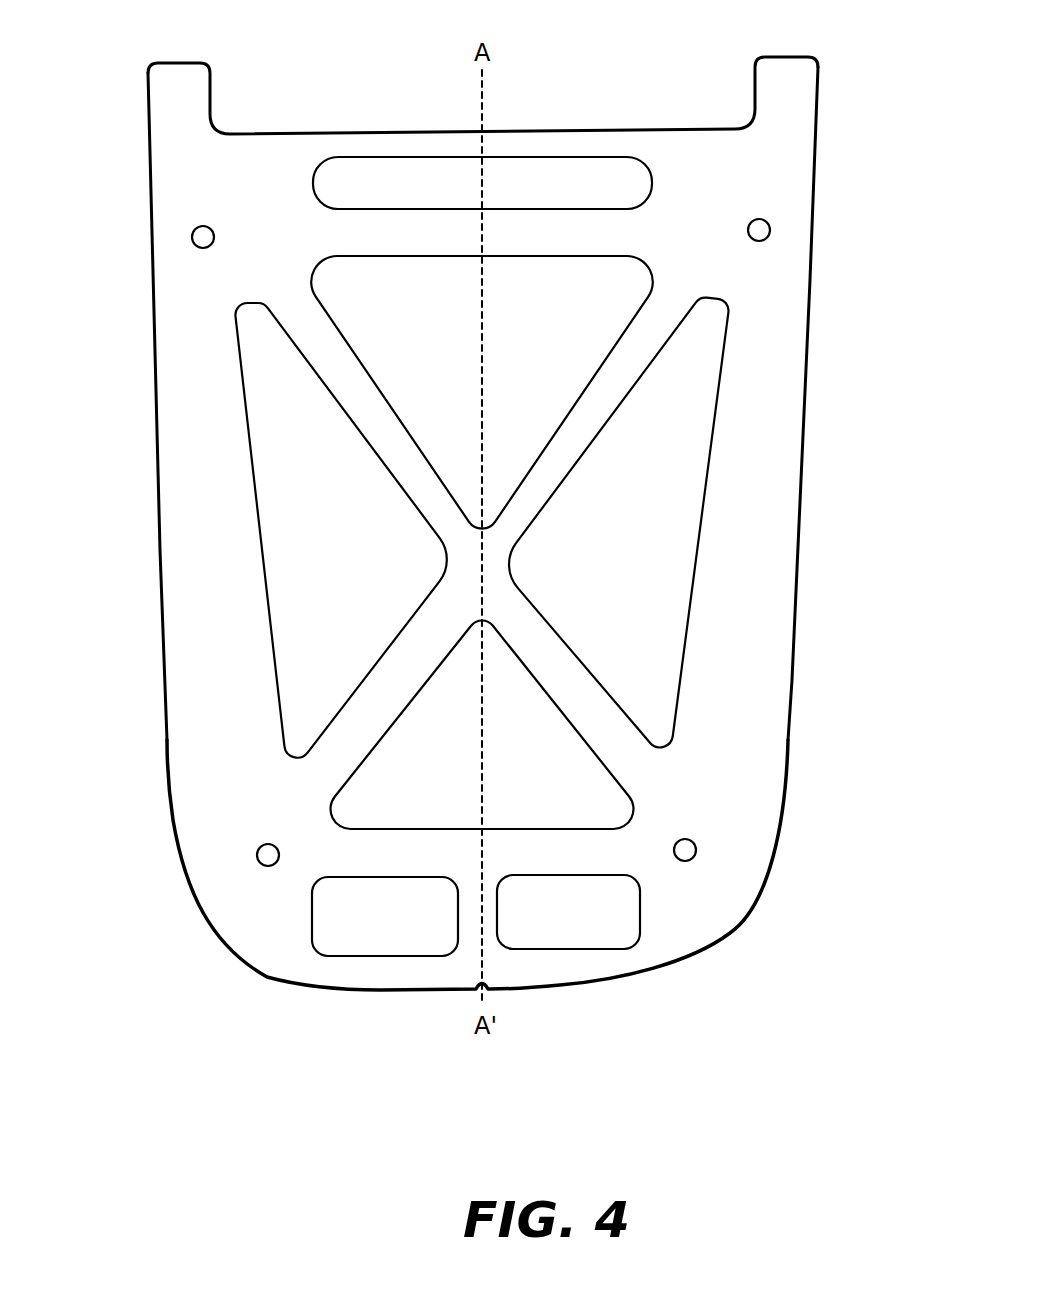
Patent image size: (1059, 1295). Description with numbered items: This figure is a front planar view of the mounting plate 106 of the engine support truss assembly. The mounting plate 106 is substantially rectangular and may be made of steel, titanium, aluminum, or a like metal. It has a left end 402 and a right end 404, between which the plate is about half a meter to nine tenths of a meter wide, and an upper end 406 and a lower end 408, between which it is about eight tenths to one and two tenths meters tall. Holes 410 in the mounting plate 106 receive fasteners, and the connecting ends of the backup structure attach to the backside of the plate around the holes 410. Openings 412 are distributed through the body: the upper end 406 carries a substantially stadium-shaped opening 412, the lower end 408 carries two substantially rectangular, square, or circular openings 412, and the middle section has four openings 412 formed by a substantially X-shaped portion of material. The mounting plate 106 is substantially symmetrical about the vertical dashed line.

The mounting plate 106 is at (518, 528).
The left end 402 is at (173, 528).
The right end 404 is at (787, 482).
The upper end 406 is at (317, 140).
The lower end 408 is at (638, 958).
The holes 410 is at (198, 234).
The openings 412 is at (580, 172).